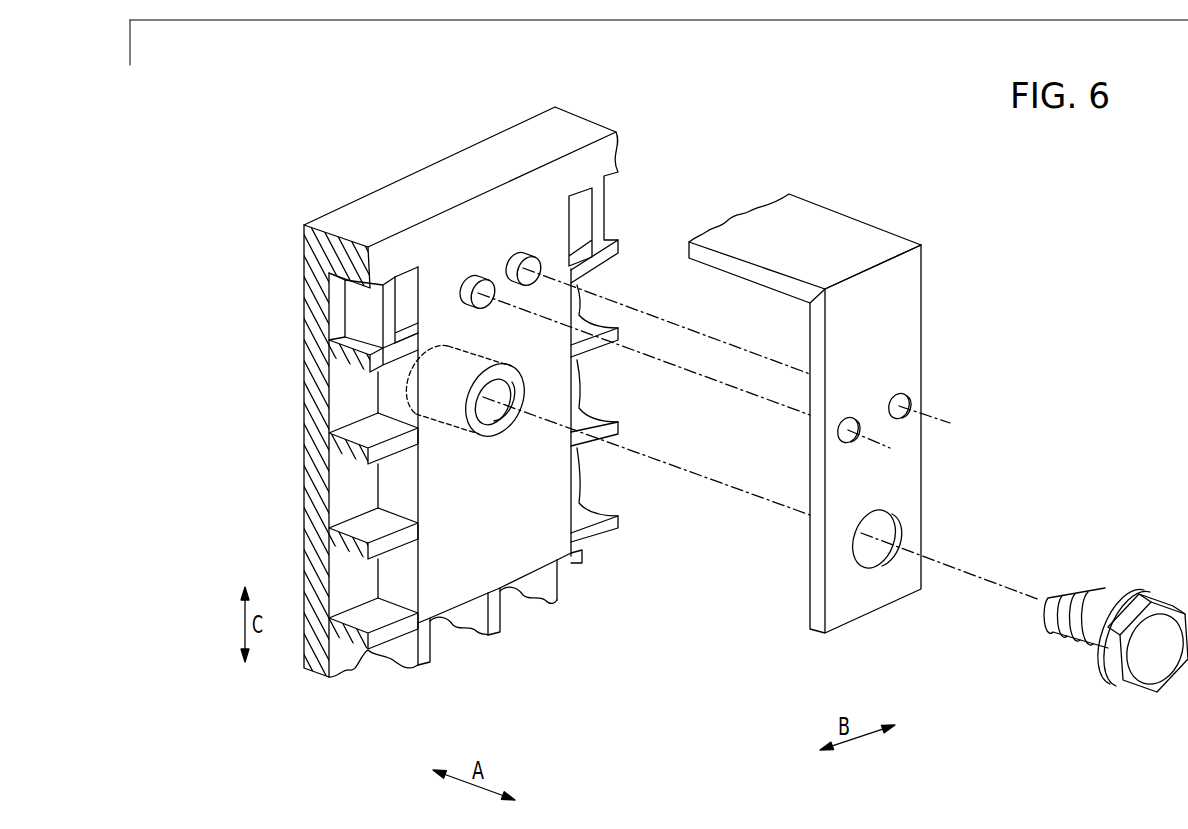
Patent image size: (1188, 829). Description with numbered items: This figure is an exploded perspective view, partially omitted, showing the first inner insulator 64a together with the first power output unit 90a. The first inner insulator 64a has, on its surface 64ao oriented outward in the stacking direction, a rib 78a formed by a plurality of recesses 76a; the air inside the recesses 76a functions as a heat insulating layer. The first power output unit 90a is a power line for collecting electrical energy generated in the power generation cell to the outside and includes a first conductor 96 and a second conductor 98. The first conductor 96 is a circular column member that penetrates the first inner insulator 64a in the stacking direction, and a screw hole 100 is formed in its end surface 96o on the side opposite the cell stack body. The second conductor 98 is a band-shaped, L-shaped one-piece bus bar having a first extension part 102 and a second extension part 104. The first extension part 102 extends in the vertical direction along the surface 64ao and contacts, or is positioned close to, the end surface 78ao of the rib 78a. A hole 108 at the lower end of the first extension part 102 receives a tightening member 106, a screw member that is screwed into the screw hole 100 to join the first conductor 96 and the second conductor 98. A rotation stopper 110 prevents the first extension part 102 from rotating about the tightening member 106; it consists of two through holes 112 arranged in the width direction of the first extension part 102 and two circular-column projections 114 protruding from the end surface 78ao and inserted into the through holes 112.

The first inner insulator 64a is at (396, 436).
The surface of the first inner insulator 64ao is at (390, 258).
The recesses 76a is at (345, 397).
The rib 78a is at (348, 466).
The end surface of the rib 78ao is at (527, 545).
The first conductor 96 is at (482, 413).
The end surface of the first conductor 96o is at (518, 387).
The screw hole 100 is at (502, 413).
The rotation stopper 110 is at (527, 207).
The projections 114 is at (520, 257).
The first power output unit 90a is at (887, 413).
The second extension part 104 is at (803, 216).
The second conductor 98 is at (908, 238).
The first extension part 102 is at (910, 484).
The through holes 112 is at (899, 414).
The hole 108 is at (874, 557).
The tightening member 106 is at (1153, 675).